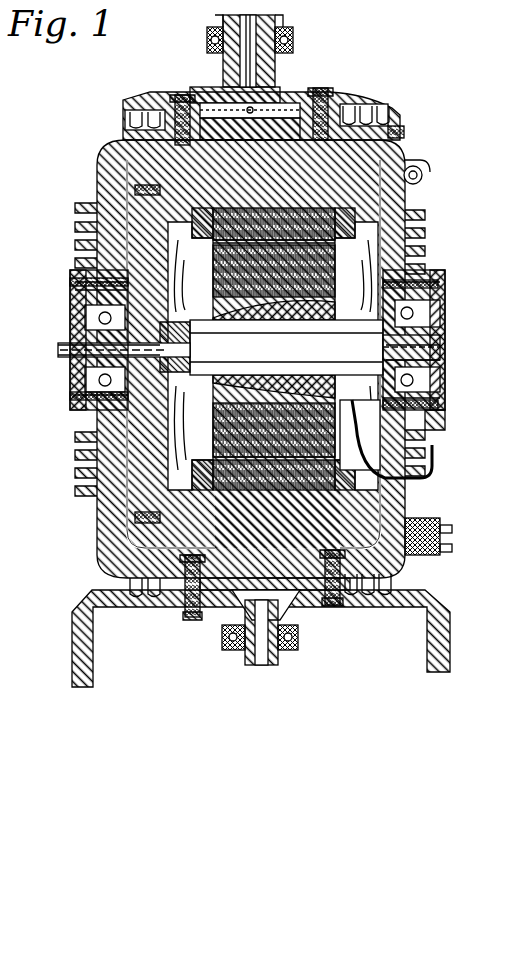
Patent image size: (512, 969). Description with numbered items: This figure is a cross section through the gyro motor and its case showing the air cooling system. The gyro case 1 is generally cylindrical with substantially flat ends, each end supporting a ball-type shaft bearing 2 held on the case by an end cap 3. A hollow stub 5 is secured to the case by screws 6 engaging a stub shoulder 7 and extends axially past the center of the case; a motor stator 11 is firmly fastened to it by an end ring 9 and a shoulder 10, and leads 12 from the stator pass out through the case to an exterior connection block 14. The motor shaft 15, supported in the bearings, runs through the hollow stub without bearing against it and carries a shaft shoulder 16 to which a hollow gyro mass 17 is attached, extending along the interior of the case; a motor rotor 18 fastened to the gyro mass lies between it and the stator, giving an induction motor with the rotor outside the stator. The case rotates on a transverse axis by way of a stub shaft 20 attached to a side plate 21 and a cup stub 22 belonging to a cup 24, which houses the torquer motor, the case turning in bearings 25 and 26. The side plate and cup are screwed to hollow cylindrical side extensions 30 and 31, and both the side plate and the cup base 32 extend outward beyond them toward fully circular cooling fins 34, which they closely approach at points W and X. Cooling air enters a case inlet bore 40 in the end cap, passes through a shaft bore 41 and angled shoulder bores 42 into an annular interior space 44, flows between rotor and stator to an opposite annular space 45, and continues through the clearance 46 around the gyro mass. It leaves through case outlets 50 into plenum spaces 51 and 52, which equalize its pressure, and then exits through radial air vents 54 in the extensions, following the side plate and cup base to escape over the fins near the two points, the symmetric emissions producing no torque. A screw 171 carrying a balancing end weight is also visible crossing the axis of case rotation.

The gyro case 1 is at (100, 502).
The shaft bearing 2 is at (100, 392).
The end cap 3 is at (85, 375).
The hollow stub 5 is at (412, 250).
The screws 6 is at (428, 432).
The stub shoulder 7 is at (415, 264).
The end ring 9 is at (190, 356).
The shoulder 10 is at (386, 435).
The motor stator 11 is at (283, 432).
The leads 12 is at (443, 524).
The connection block 14 is at (453, 540).
The motor shaft 15 is at (292, 344).
The shaft shoulder 16 is at (92, 428).
The gyro mass 17 is at (283, 526).
The motor rotor 18 is at (273, 475).
The stub shaft 20 is at (278, 64).
The side plate 21 is at (330, 96).
The cup stub 22 is at (305, 614).
The cup 24 is at (442, 640).
The bearing 25 is at (293, 38).
The bearing 26 is at (298, 640).
The cylindrical side extension 30 is at (345, 92).
The cylindrical side extension 31 is at (338, 604).
The cup base 32 is at (112, 612).
The circular cooling fins 34 is at (118, 124).
The case inlet bore 40 is at (82, 344).
The shaft bore 41 is at (92, 352).
The angled shoulder bores 42 is at (165, 340).
The annular interior space 44 is at (193, 470).
The annular space 45 is at (375, 494).
The clearance 46 is at (205, 556).
The case outlets 50 is at (405, 130).
The space 51 is at (285, 100).
The space 52 is at (272, 606).
The radial air vents 54 is at (170, 95).
The screw 171 is at (420, 166).
The point W is at (400, 107).
The point X is at (96, 112).